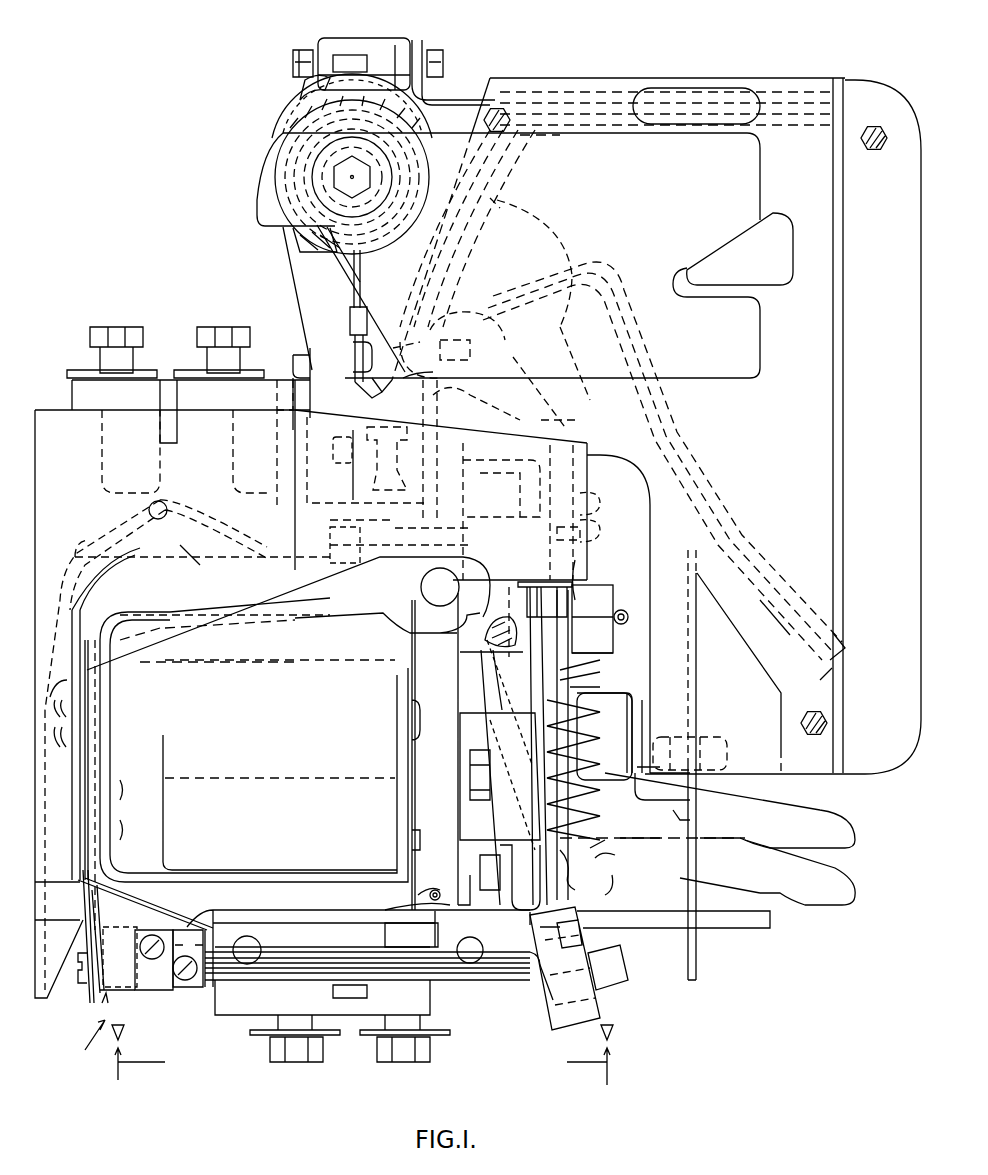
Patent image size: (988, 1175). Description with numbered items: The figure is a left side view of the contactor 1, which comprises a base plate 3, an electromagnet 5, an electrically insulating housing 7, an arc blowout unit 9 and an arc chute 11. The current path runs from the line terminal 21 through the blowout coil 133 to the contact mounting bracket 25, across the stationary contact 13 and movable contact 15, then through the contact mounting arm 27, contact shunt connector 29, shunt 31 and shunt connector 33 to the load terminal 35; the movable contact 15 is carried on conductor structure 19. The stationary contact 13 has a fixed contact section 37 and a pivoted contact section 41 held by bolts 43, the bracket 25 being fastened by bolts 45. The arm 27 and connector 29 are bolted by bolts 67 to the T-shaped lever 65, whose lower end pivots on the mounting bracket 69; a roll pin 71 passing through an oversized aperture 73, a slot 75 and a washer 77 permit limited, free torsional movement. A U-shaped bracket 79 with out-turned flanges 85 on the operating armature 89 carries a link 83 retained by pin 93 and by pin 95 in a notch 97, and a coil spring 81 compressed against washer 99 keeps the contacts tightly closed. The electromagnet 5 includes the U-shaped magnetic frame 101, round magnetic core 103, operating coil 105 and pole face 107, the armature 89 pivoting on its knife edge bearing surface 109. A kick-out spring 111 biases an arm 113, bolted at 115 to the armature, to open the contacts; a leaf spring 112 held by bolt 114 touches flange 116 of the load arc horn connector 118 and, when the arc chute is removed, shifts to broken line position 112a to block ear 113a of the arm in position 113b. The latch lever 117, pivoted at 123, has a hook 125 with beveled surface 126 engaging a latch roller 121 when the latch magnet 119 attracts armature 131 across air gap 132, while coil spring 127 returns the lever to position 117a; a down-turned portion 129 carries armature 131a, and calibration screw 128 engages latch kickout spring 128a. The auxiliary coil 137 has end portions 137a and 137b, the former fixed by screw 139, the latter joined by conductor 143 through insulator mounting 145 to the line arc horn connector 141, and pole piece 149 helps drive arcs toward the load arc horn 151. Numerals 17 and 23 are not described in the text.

The contactor 1 is at (82, 1054).
The base plate 3 is at (645, 930).
The electromagnet 5 is at (290, 834).
The electrically insulating housing 7 is at (128, 550).
The arc blowout unit 9 is at (283, 128).
The arc chute 11 is at (788, 80).
The stationary contact 13 is at (440, 330).
The movable contact 15 is at (460, 358).
The contact assembly 17 is at (350, 478).
The conductor structure 19 is at (578, 417).
The line terminal 21 is at (72, 385).
The contact arm 23 is at (330, 505).
The contact mounting bracket 25 is at (360, 540).
The contact mounting arm 27 is at (555, 402).
The contact shunt connector 29 is at (520, 443).
The shunt 31 is at (590, 690).
The shunt connector 33 is at (555, 1035).
The load terminal 35 is at (325, 1012).
The fixed contact section 37 is at (470, 398).
The pivoted contact section 41 is at (405, 345).
The bolt 43 is at (335, 440).
The bolt 45 is at (366, 392).
The lever 65 is at (457, 690).
The bolt 67 is at (600, 510).
The mounting bracket 69 is at (610, 888).
The roll pin 71 is at (480, 868).
The aperture 73 is at (500, 899).
The slot 75 is at (525, 932).
The washer 77 is at (500, 855).
The U-shaped bracket 79 is at (590, 580).
The coil spring 81 is at (613, 653).
The link 83 is at (620, 595).
The out-turned flange 85 is at (478, 660).
The operating armature 89 is at (450, 652).
The pin 93 is at (628, 620).
The pin 95 is at (527, 680).
The notch 97 is at (555, 700).
The washer 99 is at (580, 666).
The U-shaped magnetic frame 101 is at (192, 562).
The round magnetic core 103 is at (175, 612).
The operating coil 105 is at (122, 815).
The magnetic pole face 107 is at (403, 760).
The knife edge bearing surface 109 is at (425, 930).
The kick-out spring 111 is at (545, 752).
The leaf spring 112 is at (637, 716).
The broken line position 112a is at (665, 880).
The arm 113 is at (598, 848).
The ear 113a is at (660, 850).
The broken line position 113b is at (800, 905).
The bolt 114 is at (636, 687).
The bolt 115 is at (500, 776).
The flange 116 is at (676, 810).
The latch lever 117 is at (362, 605).
The broken line position 117a is at (268, 630).
The load arc horn connector 118 is at (699, 690).
The latch magnet 119 is at (447, 985).
The latch roller 121 is at (440, 568).
The pivot 123 is at (148, 510).
The hook 125 is at (482, 580).
The latch hook surface 126 is at (480, 560).
The coil spring 127 is at (360, 547).
The latch release calibration screw 128 is at (82, 1000).
The latch kickout spring 128a is at (108, 1000).
The down-turned portion 129 is at (90, 728).
The armature 131 is at (213, 915).
The armature 131a is at (178, 993).
The air gap 132 is at (190, 925).
The coil 133 is at (295, 108).
The auxiliary coil 137 is at (290, 180).
The end portion 137a is at (320, 292).
The end portion 137b is at (300, 95).
The screw 139 is at (310, 345).
The line arc horn connector 141 is at (487, 95).
The conductor 143 is at (305, 50).
The insulator mounting 145 is at (385, 45).
The pole piece 149 is at (275, 228).
The load arc horn 151 is at (560, 310).